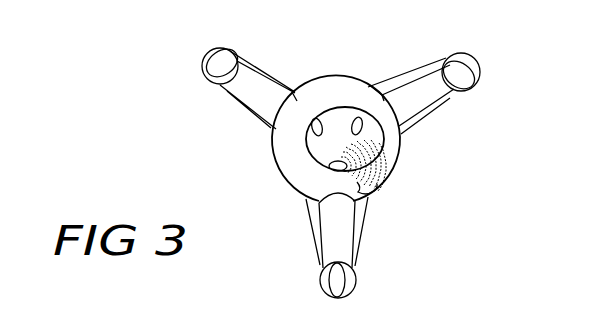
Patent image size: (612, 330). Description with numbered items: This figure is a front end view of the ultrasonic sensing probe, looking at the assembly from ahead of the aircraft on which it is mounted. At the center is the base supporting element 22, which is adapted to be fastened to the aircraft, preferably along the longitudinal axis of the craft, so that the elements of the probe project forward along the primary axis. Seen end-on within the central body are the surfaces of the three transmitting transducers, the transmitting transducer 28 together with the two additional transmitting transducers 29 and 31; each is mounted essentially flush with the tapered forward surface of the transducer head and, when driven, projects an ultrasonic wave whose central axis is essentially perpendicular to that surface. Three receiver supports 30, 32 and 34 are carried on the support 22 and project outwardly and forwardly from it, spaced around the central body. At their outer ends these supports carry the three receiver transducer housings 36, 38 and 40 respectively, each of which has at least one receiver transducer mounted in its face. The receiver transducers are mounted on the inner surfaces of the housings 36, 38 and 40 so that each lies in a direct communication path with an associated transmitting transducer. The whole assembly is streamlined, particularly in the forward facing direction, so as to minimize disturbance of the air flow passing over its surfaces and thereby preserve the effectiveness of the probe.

The base supporting element 22 is at (290, 165).
The transmitting transducer 28 is at (370, 194).
The transmitting transducer 29 is at (312, 122).
The transmitting transducer 31 is at (362, 118).
The receiver support 30 is at (259, 104).
The receiver support 32 is at (337, 239).
The receiver support 34 is at (432, 104).
The receiver transducer housing 36 is at (215, 64).
The receiver transducer housing 38 is at (332, 278).
The receiver transducer housing 40 is at (466, 72).